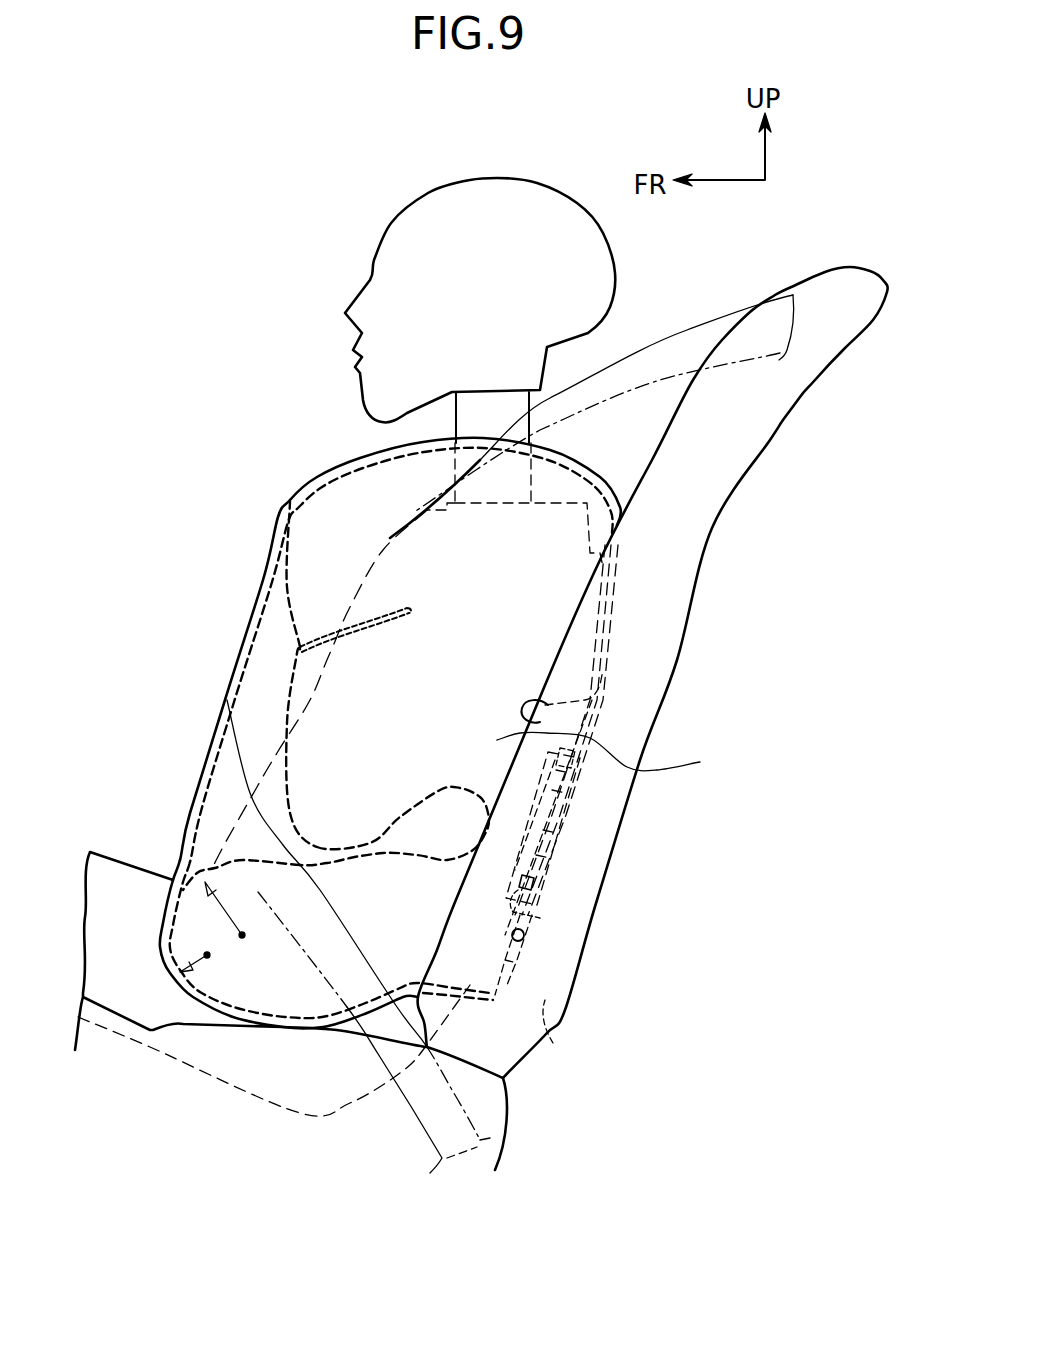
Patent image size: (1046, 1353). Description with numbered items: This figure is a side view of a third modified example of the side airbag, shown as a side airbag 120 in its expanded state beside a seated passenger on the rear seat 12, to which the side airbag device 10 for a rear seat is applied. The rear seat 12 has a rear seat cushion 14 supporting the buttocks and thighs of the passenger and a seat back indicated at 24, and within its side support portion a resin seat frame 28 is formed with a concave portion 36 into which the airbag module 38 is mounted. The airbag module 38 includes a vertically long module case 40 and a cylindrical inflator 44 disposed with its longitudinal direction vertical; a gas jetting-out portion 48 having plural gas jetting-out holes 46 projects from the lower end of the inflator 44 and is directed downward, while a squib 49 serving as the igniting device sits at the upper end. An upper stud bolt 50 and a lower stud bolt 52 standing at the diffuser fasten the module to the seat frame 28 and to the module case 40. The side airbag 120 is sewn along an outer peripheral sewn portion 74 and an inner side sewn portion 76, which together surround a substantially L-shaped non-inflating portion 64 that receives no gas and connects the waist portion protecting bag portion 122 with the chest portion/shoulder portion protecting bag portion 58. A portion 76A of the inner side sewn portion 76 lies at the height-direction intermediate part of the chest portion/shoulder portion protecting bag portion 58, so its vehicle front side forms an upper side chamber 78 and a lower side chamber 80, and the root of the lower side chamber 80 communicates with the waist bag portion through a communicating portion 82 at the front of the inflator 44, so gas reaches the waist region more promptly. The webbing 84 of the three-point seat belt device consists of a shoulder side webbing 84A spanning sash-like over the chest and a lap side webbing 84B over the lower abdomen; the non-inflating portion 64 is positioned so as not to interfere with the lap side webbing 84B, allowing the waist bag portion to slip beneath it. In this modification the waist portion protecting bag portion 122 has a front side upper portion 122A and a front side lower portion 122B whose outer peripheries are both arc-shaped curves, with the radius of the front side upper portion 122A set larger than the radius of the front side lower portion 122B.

The side airbag device for a rear seat 10 is at (195, 585).
The rear seat 12 is at (770, 445).
The rear seat cushion 14 is at (132, 1017).
The seat back pad 24 is at (712, 528).
The seat frame 28 is at (553, 1043).
The concave portion 36 is at (530, 950).
The airbag module 38 is at (607, 725).
The module case 40 is at (533, 977).
The inflator 44 is at (557, 837).
The gas jetting-out holes 46 is at (523, 893).
The gas jetting-out portion 48 is at (520, 930).
The squib 49 is at (570, 755).
The upper stud bolt 50 is at (593, 815).
The lower stud bolt 52 is at (530, 872).
The chest portion/shoulder portion protecting bag portion 58 is at (312, 543).
The non-inflating portion 64 is at (225, 790).
The outer peripheral sewn portion 74 is at (253, 638).
The inner side sewn portion 76 is at (413, 810).
The portion of the inner side sewn portion 76A is at (385, 625).
The upper side chamber 78 is at (352, 492).
The lower side chamber 80 is at (320, 690).
The communicating portion 82 is at (617, 754).
The webbing 84 is at (721, 312).
The shoulder side webbing 84A is at (647, 350).
The lap side webbing 84B is at (395, 1087).
The side airbag 120 is at (276, 498).
The waist portion protecting bag portion 122 is at (278, 997).
The front side upper portion 122A is at (218, 863).
The front side lower portion 122B is at (200, 983).